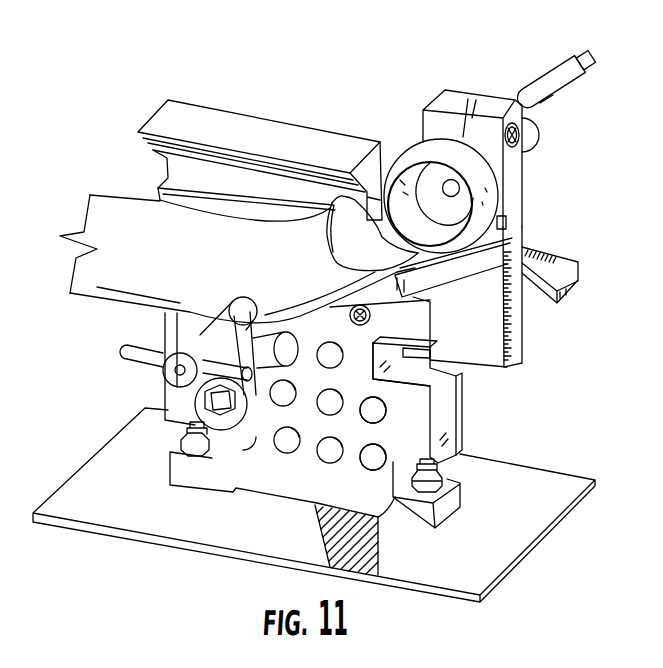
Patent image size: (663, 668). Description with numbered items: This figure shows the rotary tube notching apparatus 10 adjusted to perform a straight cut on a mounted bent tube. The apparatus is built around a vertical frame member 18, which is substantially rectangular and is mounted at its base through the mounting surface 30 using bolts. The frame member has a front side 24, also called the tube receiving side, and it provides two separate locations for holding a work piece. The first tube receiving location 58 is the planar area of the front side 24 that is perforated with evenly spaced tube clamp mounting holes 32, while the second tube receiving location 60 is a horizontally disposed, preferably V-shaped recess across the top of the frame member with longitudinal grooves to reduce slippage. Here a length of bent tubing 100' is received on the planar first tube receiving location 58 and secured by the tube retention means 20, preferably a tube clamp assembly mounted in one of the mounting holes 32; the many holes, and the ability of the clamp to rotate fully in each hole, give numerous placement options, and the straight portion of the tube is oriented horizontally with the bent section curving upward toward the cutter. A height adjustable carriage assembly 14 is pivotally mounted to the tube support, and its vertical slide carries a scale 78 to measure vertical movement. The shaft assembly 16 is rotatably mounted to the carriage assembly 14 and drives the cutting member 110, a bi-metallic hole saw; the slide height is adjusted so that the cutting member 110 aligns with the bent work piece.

The rotary tube notching apparatus 10 is at (284, 110).
The carriage assembly 14 is at (550, 239).
The shaft assembly 16 is at (510, 58).
The vertical frame member 18 is at (445, 415).
The tube retention means 20 is at (127, 324).
The front side 24 is at (264, 497).
The mounting surface 30 is at (297, 534).
The tube clamp mounting holes 32 is at (380, 455).
The first tube receiving location 58 is at (340, 378).
The second tube receiving location 60 is at (152, 175).
The scale 78 is at (498, 221).
The bent tubing 100' is at (239, 259).
The cutting member 110 is at (483, 195).